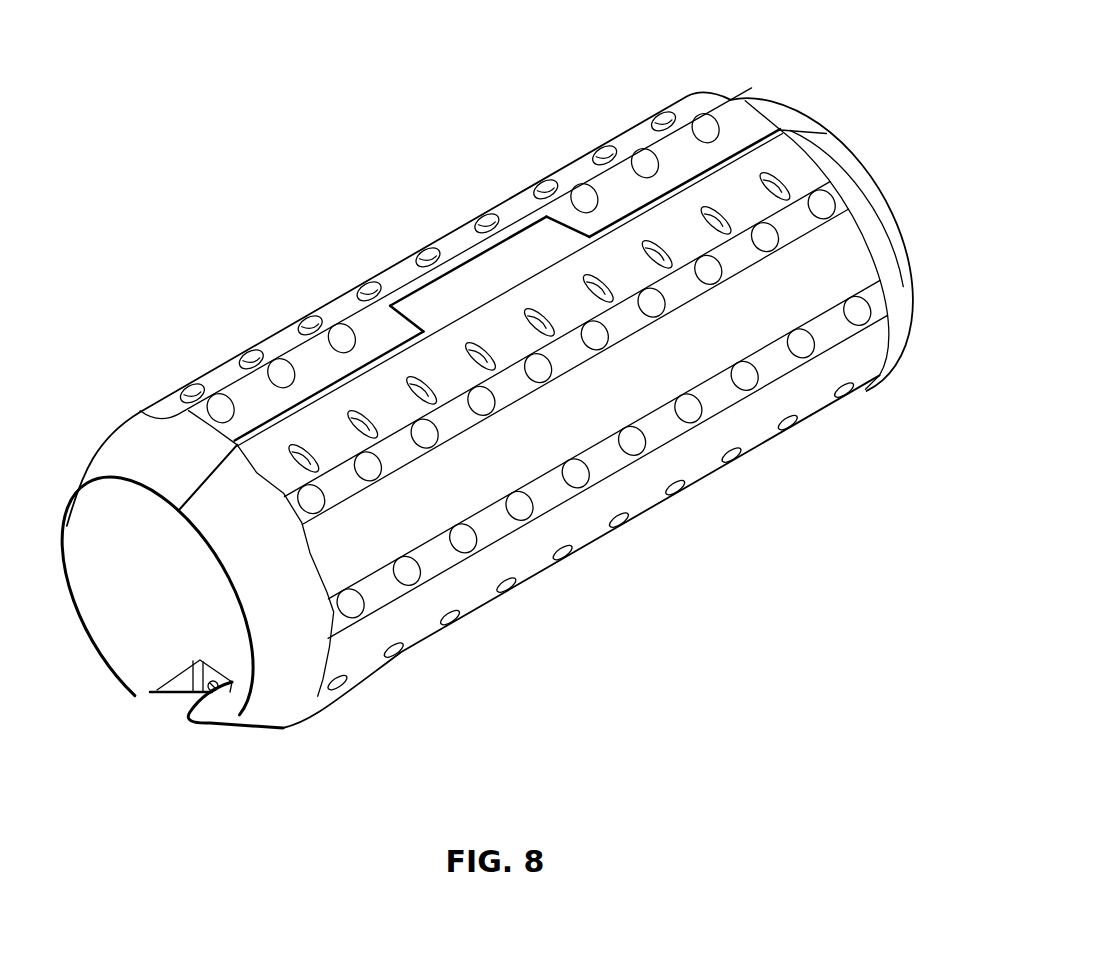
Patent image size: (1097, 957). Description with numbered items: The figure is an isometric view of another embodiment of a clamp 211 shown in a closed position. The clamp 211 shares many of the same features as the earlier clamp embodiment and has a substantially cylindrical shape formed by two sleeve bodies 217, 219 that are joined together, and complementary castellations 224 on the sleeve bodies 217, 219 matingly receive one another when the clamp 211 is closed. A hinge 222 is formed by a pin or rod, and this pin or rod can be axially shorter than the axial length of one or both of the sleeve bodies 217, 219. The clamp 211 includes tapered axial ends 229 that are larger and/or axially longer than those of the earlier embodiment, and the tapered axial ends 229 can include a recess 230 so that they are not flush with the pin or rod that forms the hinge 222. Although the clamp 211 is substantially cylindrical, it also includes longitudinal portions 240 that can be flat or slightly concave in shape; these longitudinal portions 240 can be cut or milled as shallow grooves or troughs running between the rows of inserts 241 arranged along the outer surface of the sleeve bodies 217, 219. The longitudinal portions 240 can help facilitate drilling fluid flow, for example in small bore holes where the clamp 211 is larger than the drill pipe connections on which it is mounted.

The clamp 211 is at (297, 222).
The sleeve body 217 is at (632, 142).
The sleeve body 219 is at (560, 527).
The hinge 222 is at (213, 695).
The channel 224 is at (400, 357).
The tapered axial ends 229 is at (123, 448).
The recess 230 is at (158, 682).
The longitudinal portions 240 is at (833, 247).
The inserts 241 is at (810, 347).